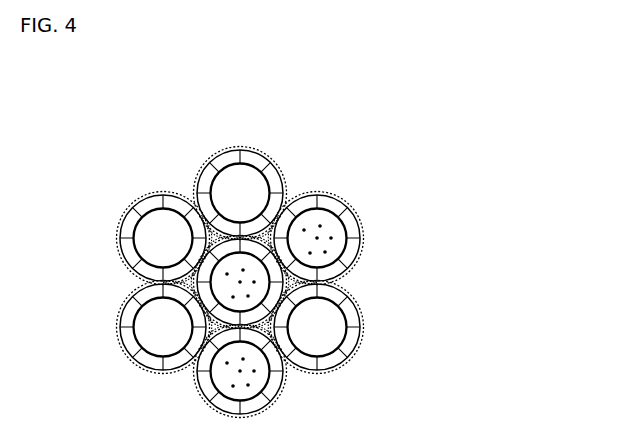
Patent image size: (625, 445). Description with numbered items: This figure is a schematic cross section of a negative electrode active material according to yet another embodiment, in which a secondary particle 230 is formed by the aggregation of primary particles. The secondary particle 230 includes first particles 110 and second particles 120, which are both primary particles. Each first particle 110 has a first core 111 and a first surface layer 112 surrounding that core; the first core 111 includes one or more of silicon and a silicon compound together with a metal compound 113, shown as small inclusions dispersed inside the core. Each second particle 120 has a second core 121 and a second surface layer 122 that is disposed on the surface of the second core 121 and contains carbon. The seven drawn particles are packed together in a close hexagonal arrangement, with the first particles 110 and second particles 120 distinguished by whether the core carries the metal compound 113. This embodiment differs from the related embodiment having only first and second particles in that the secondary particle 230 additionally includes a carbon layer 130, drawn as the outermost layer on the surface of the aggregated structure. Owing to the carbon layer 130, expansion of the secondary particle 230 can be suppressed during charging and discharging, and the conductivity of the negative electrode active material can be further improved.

The first particle 110 is at (443, 216).
The first core 111 is at (352, 269).
The first surface layer 112 is at (359, 246).
The metal compound 113 is at (331, 239).
The second particle 120 is at (263, 79).
The second core 121 is at (222, 182).
The second surface layer 122 is at (248, 149).
The carbon layer 130 is at (275, 160).
The secondary particle 230 is at (385, 162).